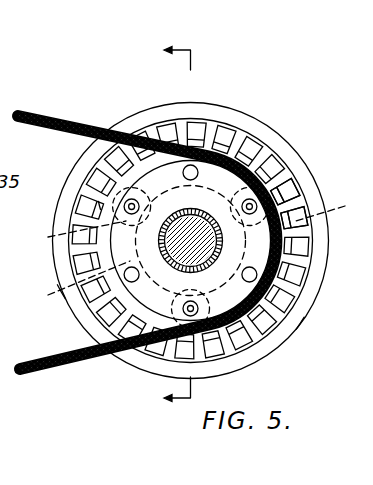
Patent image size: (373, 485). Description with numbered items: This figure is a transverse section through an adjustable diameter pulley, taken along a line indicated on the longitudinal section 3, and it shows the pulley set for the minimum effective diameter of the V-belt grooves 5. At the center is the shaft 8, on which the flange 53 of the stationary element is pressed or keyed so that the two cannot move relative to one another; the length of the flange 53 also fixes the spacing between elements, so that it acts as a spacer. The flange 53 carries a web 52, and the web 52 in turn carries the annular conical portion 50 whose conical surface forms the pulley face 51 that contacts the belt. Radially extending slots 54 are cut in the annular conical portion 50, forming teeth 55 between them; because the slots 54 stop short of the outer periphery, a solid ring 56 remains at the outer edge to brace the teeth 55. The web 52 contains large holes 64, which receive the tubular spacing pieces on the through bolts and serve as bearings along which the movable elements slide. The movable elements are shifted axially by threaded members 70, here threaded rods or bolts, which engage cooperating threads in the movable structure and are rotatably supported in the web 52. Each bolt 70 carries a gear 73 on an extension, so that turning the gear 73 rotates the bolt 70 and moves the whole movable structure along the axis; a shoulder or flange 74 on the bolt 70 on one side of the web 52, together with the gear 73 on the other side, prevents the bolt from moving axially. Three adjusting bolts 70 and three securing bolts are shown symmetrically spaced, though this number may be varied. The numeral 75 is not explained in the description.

The longitudinal section line 3 is at (168, 224).
The V-belt groove 5 is at (66, 114).
The shaft 8 is at (170, 241).
The annular conical portion 50 is at (199, 102).
The conical surface or pulley face 51 is at (214, 126).
The web 52 is at (238, 139).
The flange 53 is at (273, 222).
The radially extending slots 54 is at (284, 187).
The teeth 55 is at (280, 196).
The solid ring 56 is at (294, 325).
The holes 64 is at (183, 173).
The threaded members 70 is at (139, 204).
The gear 73 is at (271, 368).
The shoulder or flange 74 is at (110, 208).
The housing wall 75 is at (65, 292).